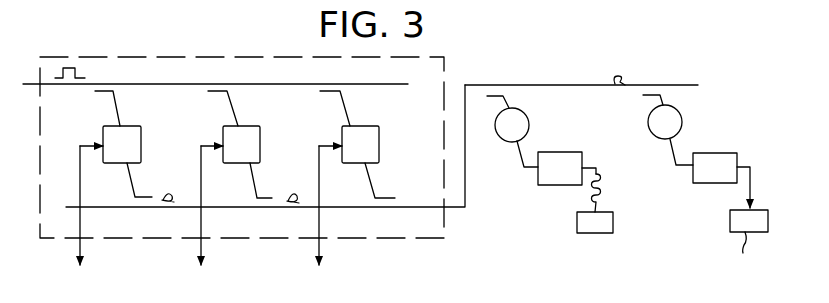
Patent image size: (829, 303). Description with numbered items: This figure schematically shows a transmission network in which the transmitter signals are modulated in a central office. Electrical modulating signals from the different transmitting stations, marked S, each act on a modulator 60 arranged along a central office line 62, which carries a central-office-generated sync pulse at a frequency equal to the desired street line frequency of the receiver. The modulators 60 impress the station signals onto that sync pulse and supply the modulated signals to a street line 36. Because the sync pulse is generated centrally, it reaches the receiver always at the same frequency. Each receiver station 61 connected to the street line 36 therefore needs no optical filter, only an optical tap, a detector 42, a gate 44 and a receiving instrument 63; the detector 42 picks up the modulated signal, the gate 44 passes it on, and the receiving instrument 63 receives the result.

The street line 36 is at (496, 85).
The detector 42 is at (529, 122).
The gate 44 is at (547, 176).
The modulator 60 is at (153, 114).
The receiver station 61 is at (545, 146).
The central office line 62 is at (267, 82).
The receiving instrument 63 is at (613, 222).